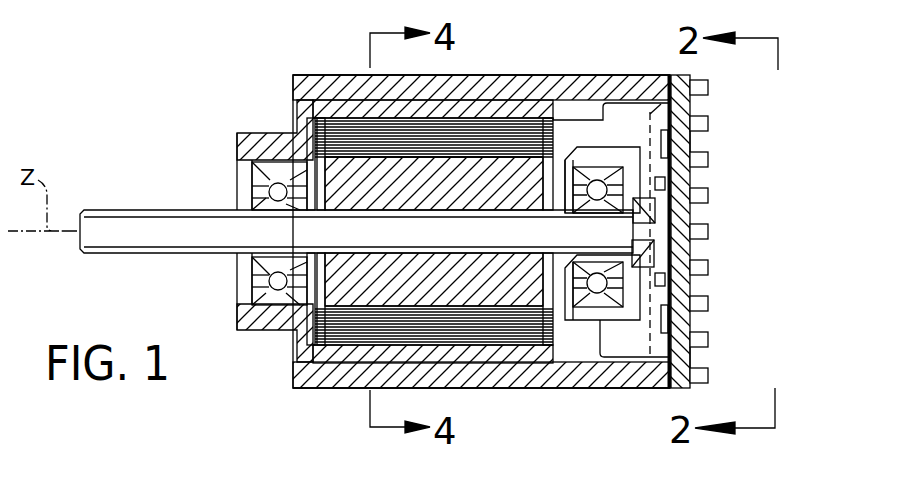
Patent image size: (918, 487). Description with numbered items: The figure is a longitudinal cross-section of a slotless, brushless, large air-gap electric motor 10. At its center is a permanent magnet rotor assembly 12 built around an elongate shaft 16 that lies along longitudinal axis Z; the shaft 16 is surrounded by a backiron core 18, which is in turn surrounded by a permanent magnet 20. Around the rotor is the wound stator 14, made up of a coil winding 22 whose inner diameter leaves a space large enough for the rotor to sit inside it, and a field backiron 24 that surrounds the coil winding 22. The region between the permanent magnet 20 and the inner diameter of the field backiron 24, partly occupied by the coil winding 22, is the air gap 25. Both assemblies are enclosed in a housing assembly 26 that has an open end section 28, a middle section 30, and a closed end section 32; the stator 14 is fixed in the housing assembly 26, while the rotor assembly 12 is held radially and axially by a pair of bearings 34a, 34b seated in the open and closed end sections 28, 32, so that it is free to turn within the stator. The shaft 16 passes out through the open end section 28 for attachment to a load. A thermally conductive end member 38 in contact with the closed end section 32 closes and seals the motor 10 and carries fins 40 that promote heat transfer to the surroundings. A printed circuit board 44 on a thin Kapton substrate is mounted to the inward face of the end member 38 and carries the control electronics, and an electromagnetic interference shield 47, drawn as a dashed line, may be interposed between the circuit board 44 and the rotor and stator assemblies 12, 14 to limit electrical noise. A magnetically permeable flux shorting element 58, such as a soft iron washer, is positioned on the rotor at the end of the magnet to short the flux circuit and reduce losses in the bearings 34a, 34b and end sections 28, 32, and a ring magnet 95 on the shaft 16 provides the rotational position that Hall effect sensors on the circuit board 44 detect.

The electric motor 10 is at (226, 116).
The permanent magnet rotor assembly 12 is at (235, 160).
The wound stator 14 is at (568, 96).
The elongate shaft 16 is at (105, 233).
The backiron core 18 is at (338, 272).
The permanent magnet 20 is at (498, 157).
The coil winding 22 is at (333, 76).
The field backiron 24 is at (348, 76).
The air gap 25 is at (527, 157).
The housing assembly 26 is at (668, 393).
The open end section 28 is at (236, 300).
The middle section 30 is at (477, 77).
The closed end section 32 is at (660, 102).
The bearing 34a is at (262, 320).
The bearing 34b is at (620, 300).
The thermally conductive end member 38 is at (688, 110).
The fins 40 is at (706, 160).
The printed circuit board 44 is at (670, 353).
The electromagnetic interference shield 47 is at (700, 170).
The magnetically permeable flux shorting element 58 is at (315, 148).
The ring magnet 95 is at (658, 252).